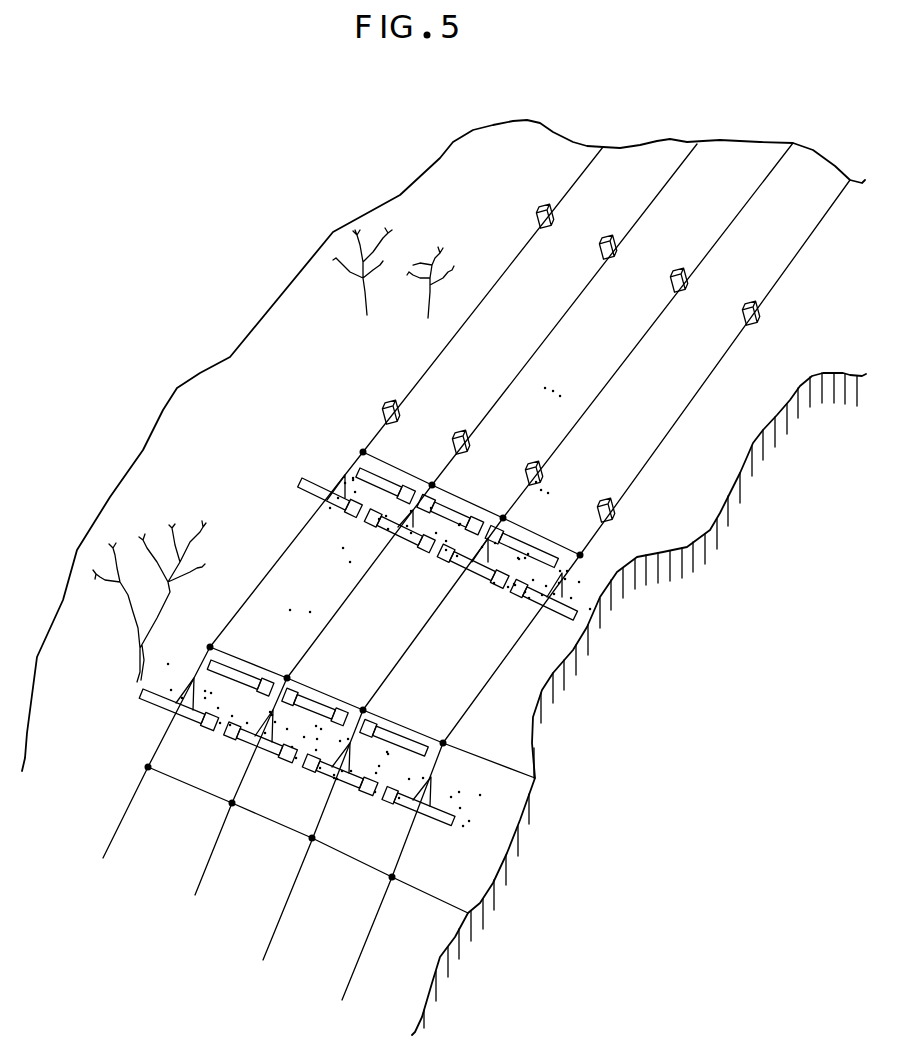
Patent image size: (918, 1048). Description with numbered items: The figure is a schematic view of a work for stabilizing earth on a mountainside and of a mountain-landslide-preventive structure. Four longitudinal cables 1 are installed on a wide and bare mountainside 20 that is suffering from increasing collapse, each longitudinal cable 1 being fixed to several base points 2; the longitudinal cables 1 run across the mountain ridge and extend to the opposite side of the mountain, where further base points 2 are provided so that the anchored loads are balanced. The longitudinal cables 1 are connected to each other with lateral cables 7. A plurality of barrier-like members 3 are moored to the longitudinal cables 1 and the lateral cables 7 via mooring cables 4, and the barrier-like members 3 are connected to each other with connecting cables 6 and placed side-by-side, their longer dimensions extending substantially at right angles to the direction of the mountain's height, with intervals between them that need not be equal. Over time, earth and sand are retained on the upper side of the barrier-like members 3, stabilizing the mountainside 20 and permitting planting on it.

The longitudinal cable 1 is at (657, 196).
The base point 2 is at (688, 282).
The barrier-like member 3 is at (540, 548).
The mooring cable 4 is at (343, 478).
The connecting cable 6 is at (437, 555).
The lateral cable 7 is at (372, 452).
The mountainside 20 is at (172, 390).